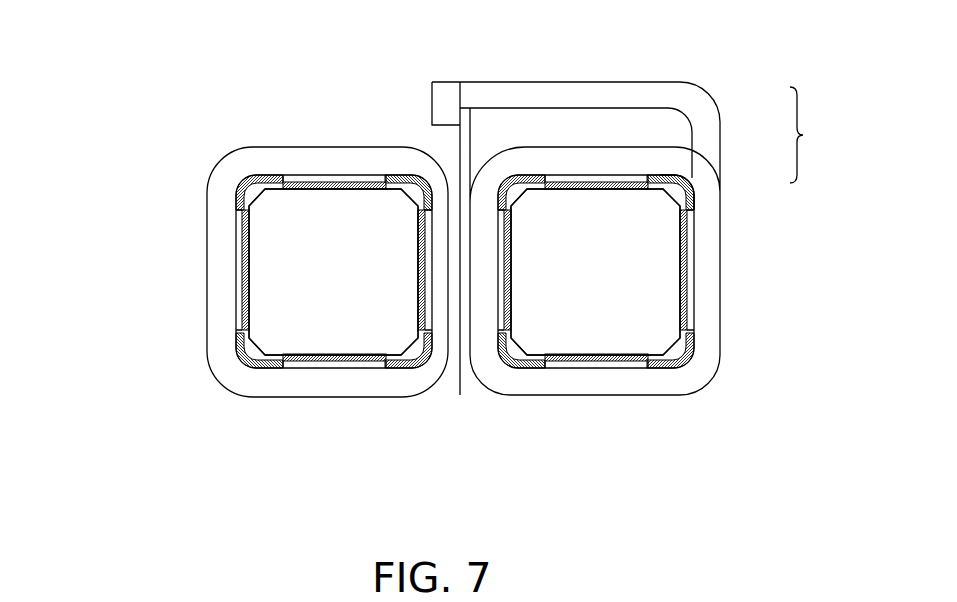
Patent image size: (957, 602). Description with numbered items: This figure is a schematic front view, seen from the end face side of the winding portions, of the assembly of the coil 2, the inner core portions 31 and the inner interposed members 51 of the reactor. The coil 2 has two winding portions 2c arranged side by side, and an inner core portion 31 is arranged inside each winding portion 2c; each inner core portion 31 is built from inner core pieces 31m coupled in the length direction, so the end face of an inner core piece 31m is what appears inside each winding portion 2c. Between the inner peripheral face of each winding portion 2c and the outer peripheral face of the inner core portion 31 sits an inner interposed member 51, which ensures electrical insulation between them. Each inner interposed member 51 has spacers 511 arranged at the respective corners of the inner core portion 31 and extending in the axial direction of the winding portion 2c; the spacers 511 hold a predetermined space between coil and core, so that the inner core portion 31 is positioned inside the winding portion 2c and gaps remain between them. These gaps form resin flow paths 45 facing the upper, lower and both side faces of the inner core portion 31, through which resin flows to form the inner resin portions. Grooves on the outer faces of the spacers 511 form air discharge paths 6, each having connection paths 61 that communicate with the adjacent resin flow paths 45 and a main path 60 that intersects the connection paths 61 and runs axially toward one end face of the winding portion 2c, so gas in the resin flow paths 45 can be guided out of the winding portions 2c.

The coil 2 is at (240, 150).
The winding portion 2c is at (289, 160).
The air discharge path 6 is at (807, 135).
The main path 60 is at (433, 165).
The connection path 61 is at (700, 150).
The resin flow path 45 is at (328, 177).
The inner interposed member 51 is at (262, 372).
The spacer 511 is at (397, 180).
The inner core piece 31m is at (303, 243).
The inner core portion 31 is at (464, 272).